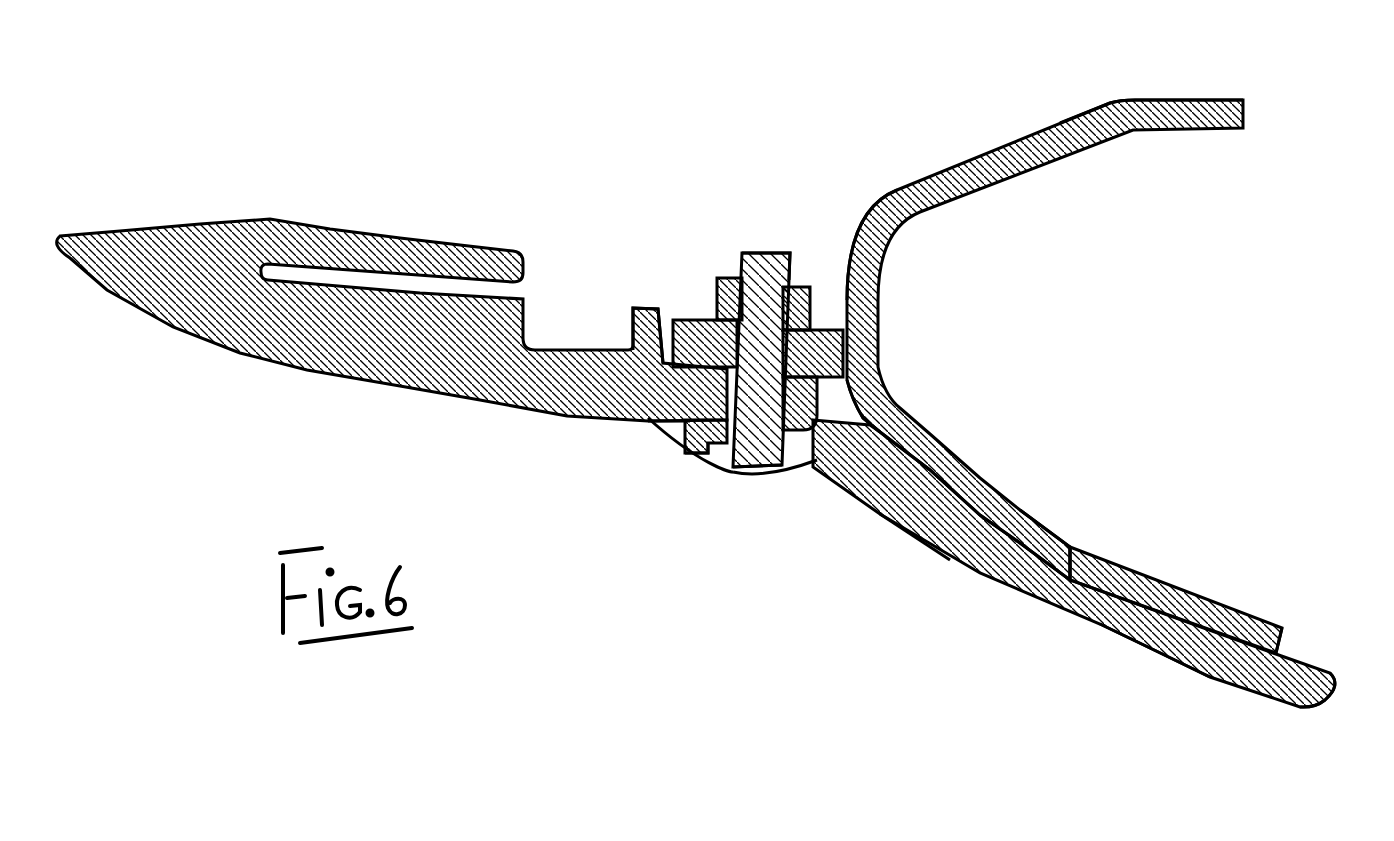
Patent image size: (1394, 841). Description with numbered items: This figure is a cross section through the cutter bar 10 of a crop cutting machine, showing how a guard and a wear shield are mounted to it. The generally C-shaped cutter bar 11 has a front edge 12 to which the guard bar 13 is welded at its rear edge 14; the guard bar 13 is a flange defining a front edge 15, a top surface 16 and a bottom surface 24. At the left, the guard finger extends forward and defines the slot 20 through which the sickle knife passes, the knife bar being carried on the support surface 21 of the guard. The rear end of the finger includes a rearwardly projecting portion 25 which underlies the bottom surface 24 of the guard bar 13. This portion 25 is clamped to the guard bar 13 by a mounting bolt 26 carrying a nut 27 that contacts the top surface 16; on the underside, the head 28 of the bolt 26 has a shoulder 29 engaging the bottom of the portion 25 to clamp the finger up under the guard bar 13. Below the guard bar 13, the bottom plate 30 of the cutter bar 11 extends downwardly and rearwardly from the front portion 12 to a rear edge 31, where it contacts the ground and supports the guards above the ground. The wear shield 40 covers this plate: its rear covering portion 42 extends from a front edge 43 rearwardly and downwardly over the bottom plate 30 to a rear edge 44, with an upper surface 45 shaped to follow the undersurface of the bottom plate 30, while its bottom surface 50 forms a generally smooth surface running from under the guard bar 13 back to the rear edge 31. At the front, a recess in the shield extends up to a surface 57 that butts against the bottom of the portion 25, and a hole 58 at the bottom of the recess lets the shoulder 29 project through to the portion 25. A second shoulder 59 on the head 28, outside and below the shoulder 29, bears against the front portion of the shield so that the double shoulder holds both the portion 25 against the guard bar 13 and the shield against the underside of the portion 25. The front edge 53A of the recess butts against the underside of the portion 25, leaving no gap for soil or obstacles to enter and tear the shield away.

The cutter bar 10 is at (1045, 290).
The C-shaped cutter bar 11 is at (1085, 135).
The front edge 12 is at (866, 287).
The guard bar 13 is at (700, 320).
The rear edge 14 is at (845, 345).
The front edge 15 is at (684, 322).
The top surface 16 is at (858, 228).
The slot 20 is at (430, 272).
The support surface 21 is at (638, 318).
The bottom surface 24 is at (827, 330).
The rearwardly projecting portion 25 is at (697, 447).
The mounting bolt 26 is at (793, 262).
The nut 27 is at (762, 254).
The head 28 is at (741, 458).
The shoulder 29 is at (710, 452).
The bottom plate 30 is at (1115, 590).
The rear edge 31 is at (1282, 637).
The wear shield 40 is at (1028, 597).
The rear covering portion 42 is at (1110, 627).
The front edge 43 is at (850, 410).
The rear edge 44 is at (1333, 685).
The upper surface 45 is at (1073, 578).
The bottom surface 50 is at (888, 530).
The front edge 53A is at (688, 422).
The surface 57 is at (687, 428).
The hole 58 is at (789, 458).
The second shoulder 59 is at (700, 487).